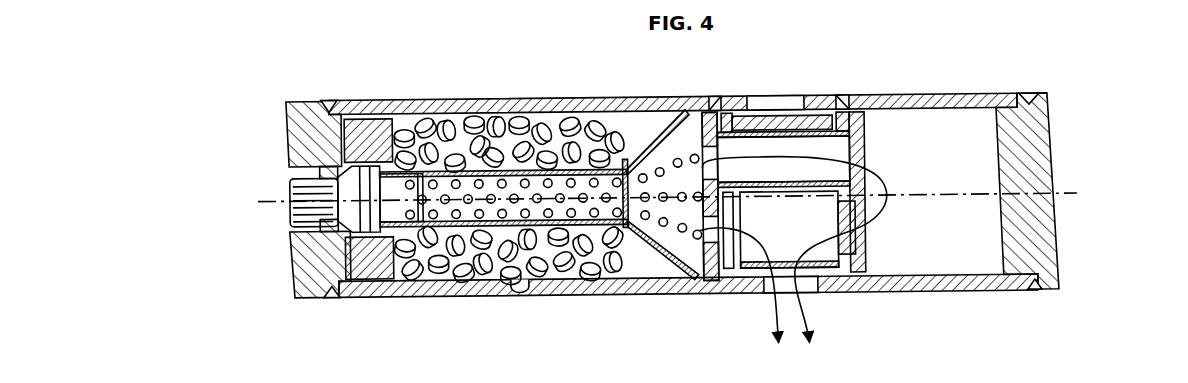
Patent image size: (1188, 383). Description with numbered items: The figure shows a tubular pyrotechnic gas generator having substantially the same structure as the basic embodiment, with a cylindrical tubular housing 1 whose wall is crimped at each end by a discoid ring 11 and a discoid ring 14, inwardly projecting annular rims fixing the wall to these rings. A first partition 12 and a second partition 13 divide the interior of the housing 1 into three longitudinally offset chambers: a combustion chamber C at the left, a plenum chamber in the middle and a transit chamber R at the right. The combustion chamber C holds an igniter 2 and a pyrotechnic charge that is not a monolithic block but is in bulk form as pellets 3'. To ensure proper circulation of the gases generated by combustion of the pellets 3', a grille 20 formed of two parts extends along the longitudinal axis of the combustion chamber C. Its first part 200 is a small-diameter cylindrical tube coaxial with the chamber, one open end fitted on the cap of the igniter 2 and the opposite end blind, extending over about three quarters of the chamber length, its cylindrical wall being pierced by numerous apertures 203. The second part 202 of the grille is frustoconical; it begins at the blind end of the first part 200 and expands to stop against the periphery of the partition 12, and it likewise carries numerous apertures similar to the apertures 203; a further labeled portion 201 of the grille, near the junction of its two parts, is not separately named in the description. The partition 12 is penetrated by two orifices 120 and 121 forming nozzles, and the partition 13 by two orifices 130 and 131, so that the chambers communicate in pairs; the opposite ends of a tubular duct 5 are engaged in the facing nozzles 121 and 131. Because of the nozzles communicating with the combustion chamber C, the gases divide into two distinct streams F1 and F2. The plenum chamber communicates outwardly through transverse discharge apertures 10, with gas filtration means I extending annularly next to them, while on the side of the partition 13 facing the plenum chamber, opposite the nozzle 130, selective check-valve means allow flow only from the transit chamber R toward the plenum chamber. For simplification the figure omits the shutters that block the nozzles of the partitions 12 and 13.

The tubular housing 1 is at (823, 70).
The igniter 2 is at (403, 191).
The pellets 3' is at (510, 171).
The tubular duct 5 is at (823, 147).
The discharge apertures 10 is at (783, 117).
The discoid ring 11 is at (303, 254).
The first partition 12 is at (706, 287).
The second partition 13 is at (866, 246).
The discoid ring 14 is at (1043, 251).
The grille 20 is at (600, 176).
The orifice (nozzle) 120 is at (737, 273).
The orifice (nozzle) 121 is at (688, 175).
The orifice (nozzle) 130 is at (872, 290).
The orifice (nozzle) 131 is at (860, 160).
The first part of the grille 200 is at (520, 293).
The housing portion 201 is at (628, 252).
The second part of the grille 202 is at (686, 257).
The apertures 203 is at (457, 276).
The combustion chamber C is at (500, 128).
The first gas stream F1 is at (739, 285).
The second gas stream F2 is at (795, 249).
The gas filtration means I is at (778, 239).
The transit chamber R is at (932, 239).